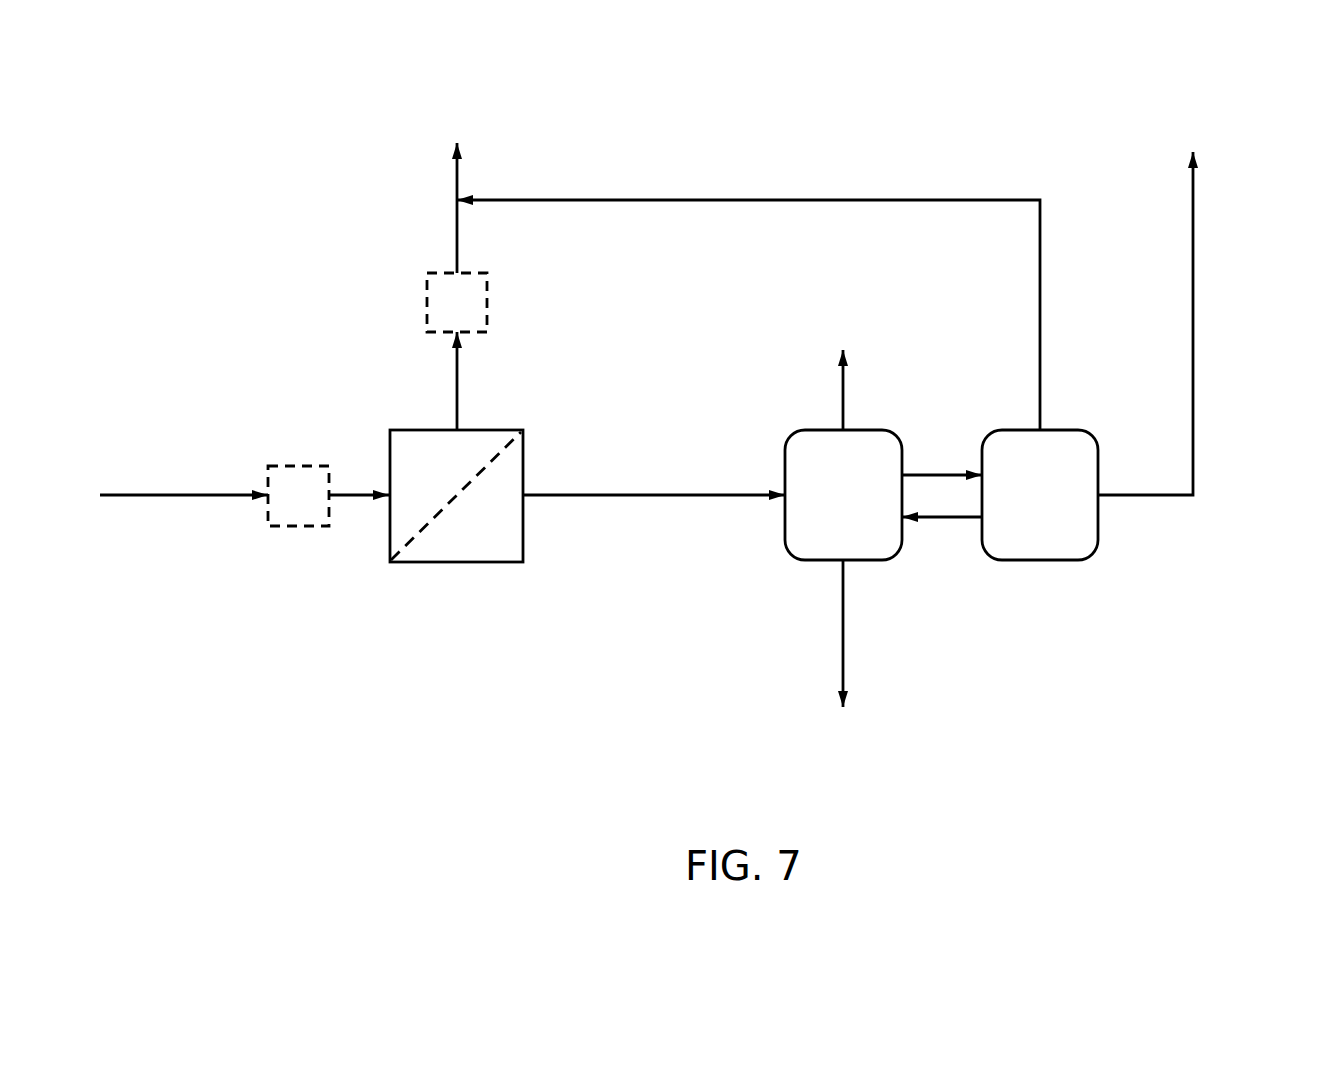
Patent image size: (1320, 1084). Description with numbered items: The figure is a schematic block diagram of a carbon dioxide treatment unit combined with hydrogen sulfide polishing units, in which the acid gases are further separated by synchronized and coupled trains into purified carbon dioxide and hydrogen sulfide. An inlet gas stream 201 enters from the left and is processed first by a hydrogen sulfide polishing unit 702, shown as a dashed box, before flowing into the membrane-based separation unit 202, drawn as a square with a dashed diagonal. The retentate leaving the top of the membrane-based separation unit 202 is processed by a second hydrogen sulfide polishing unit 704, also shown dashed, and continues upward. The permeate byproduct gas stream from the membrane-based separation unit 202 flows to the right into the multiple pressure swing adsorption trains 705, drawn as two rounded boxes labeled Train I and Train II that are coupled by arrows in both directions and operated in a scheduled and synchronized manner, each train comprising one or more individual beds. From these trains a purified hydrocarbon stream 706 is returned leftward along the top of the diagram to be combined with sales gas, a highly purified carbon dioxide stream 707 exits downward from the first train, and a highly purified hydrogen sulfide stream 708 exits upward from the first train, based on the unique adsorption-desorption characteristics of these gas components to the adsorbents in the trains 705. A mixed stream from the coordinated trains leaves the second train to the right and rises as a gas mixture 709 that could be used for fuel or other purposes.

The inlet gas stream 201 is at (203, 495).
The hydrogen sulfide polishing unit 702 is at (292, 526).
The membrane-based separation unit 202 is at (495, 430).
The hydrogen sulfide polishing unit 704 is at (487, 293).
The purified hydrocarbon stream 706 is at (782, 200).
The pressure swing adsorption trains 705 is at (790, 557).
The highly purified hydrogen sulfide stream 708 is at (843, 405).
The highly purified carbon dioxide stream 707 is at (843, 647).
The gas mixture 709 is at (1195, 207).